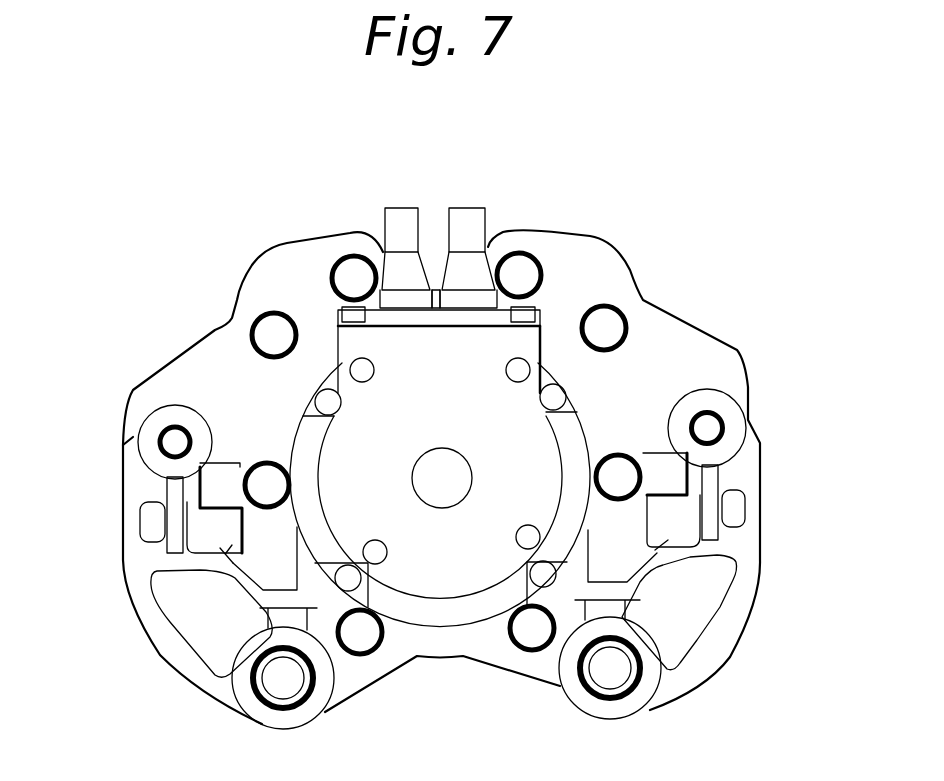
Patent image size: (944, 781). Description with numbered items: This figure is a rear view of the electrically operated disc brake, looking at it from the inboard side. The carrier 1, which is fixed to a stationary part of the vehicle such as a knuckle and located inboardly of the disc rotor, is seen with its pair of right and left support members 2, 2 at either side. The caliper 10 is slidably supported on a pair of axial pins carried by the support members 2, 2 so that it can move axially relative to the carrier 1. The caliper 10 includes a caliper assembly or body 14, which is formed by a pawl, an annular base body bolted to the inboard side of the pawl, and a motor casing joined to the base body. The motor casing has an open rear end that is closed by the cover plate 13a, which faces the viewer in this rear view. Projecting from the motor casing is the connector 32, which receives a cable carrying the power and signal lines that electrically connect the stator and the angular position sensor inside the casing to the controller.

The carrier 1 is at (171, 662).
The support member 2 is at (137, 480).
The caliper 10 is at (683, 312).
The cover plate 13a is at (345, 455).
The caliper assembly or body 14 is at (450, 639).
The connector 32 is at (403, 222).